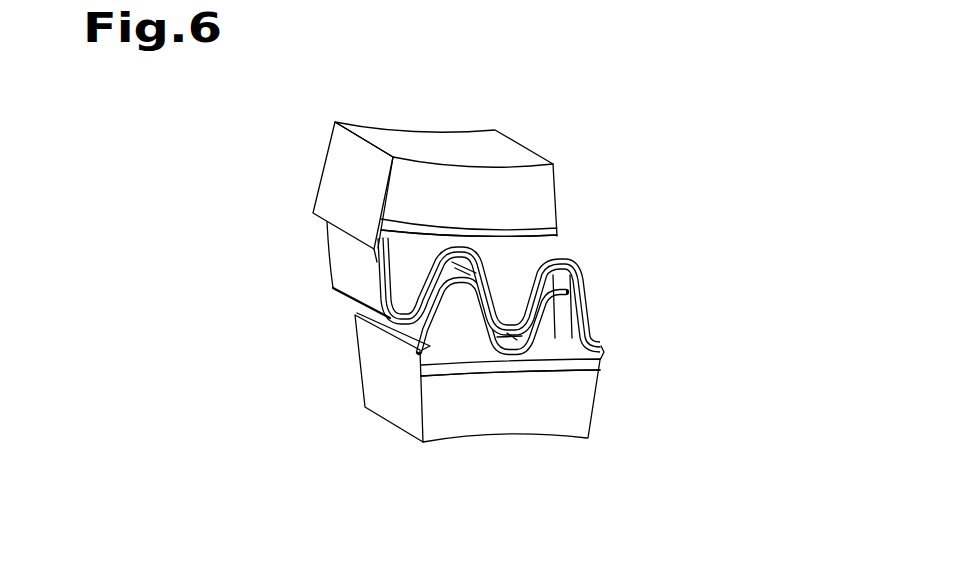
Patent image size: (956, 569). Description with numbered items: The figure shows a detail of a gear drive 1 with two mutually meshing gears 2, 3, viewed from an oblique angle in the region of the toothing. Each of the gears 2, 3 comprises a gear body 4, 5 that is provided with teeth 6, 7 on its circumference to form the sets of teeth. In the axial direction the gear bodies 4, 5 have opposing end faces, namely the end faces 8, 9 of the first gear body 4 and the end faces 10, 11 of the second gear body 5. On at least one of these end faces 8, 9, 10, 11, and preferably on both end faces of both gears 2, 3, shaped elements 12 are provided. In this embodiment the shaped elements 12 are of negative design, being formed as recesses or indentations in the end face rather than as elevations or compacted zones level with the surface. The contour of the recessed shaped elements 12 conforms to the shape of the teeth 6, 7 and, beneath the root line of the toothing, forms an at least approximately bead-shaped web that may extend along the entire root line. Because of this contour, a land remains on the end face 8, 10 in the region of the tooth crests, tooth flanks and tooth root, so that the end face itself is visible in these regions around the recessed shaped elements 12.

The gear drive 1 is at (665, 101).
The gear 2 is at (517, 140).
The gear 3 is at (354, 382).
The gear body 4 is at (454, 134).
The gear body 5 is at (383, 421).
The teeth 6 is at (325, 258).
The teeth 7 is at (592, 288).
The end face 8 is at (544, 195).
The end face 9 is at (310, 201).
The end face 10 is at (578, 411).
The end face 11 is at (351, 367).
The shaped element 12 is at (379, 280).